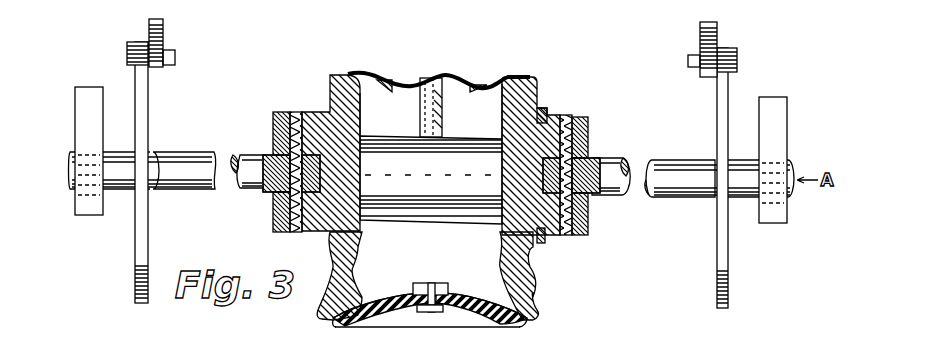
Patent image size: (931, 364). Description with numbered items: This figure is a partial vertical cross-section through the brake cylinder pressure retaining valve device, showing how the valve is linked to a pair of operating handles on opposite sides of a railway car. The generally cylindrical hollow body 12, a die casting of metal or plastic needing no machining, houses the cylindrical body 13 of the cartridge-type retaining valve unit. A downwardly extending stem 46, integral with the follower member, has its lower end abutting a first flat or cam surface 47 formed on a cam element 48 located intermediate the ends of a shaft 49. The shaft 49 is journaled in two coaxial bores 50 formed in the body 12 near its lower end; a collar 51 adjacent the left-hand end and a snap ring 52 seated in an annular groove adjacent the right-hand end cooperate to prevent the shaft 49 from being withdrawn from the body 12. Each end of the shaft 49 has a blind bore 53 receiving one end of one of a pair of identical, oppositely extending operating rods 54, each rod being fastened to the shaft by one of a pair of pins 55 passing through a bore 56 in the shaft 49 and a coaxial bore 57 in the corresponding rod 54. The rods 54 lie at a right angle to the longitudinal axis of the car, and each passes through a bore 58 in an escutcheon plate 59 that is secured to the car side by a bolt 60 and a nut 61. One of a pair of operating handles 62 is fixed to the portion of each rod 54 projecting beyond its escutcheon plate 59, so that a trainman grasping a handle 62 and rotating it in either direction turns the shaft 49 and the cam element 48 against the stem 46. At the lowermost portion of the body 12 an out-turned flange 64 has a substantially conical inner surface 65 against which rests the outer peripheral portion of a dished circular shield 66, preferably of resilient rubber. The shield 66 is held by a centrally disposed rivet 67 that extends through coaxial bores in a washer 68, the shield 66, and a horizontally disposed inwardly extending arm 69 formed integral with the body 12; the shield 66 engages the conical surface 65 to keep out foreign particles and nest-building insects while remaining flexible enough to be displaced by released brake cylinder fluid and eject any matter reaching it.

The hollow body 12 is at (340, 83).
The cylindrical body 13 is at (380, 85).
The stem 46 is at (443, 114).
The cam surface 47 is at (404, 137).
The cam element 48 is at (418, 185).
The shaft 49 is at (552, 233).
The coaxial bores 50 is at (355, 240).
The collar 51 is at (328, 110).
The snap ring 52 is at (542, 110).
The blind bore 53 is at (272, 158).
The operating rods 54 is at (238, 153).
The pins 55 is at (293, 218).
The bore 56 is at (287, 120).
The coaxial bore 57 is at (290, 193).
The bore 58 is at (160, 150).
The escutcheon plate 59 is at (147, 103).
The bolt 60 is at (133, 43).
The nut 61 is at (167, 50).
The operating handles 62 is at (82, 110).
The out-turned flange 64 is at (532, 313).
The conical inner surface 65 is at (337, 322).
The dished circular shield 66 is at (374, 313).
The rivet 67 is at (427, 312).
The washer 68 is at (437, 312).
The arm 69 is at (444, 287).